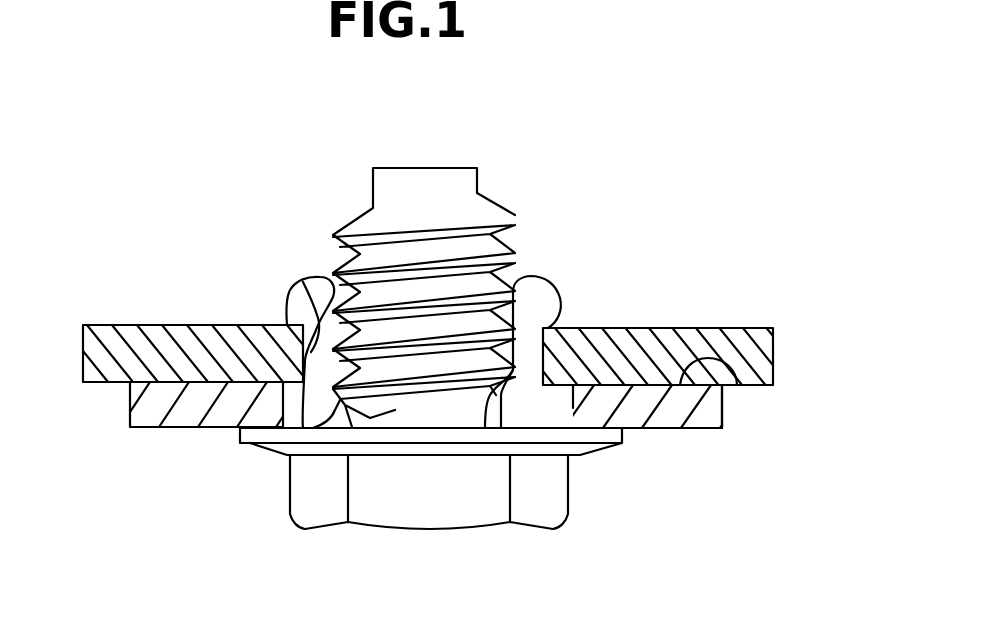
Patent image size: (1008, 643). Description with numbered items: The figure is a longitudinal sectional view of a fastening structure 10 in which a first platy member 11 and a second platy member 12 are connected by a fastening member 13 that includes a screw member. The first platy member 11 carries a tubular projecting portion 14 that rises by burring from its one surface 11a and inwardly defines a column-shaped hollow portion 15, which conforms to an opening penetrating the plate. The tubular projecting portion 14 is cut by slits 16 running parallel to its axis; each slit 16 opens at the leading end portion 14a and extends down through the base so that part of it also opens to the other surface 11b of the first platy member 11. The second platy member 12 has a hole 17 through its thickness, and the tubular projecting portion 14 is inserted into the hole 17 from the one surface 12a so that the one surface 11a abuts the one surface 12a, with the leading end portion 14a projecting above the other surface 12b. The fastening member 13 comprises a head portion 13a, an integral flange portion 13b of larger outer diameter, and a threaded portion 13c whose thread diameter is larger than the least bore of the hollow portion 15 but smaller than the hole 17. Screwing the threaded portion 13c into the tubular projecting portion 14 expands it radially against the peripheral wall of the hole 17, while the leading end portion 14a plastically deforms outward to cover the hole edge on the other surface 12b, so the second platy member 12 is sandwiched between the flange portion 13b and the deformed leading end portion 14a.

The fastening structure 10 is at (592, 155).
The first platy member 11 is at (165, 428).
The one surface of the first platy member 11a is at (740, 387).
The other surface of the first platy member 11b is at (683, 432).
The second platy member 12 is at (162, 325).
The one surface of the second platy member 12a is at (715, 358).
The other surface of the second platy member 12b is at (730, 328).
The fastening member 13 is at (505, 545).
The head portion 13a is at (402, 531).
The flange portion 13b is at (232, 444).
The threaded portion 13c is at (495, 200).
The tubular projecting portion 14 is at (525, 352).
The leading end portion 14a is at (538, 288).
The hollow portion 15 is at (345, 392).
The slit 16 is at (572, 405).
The hole 17 is at (323, 302).